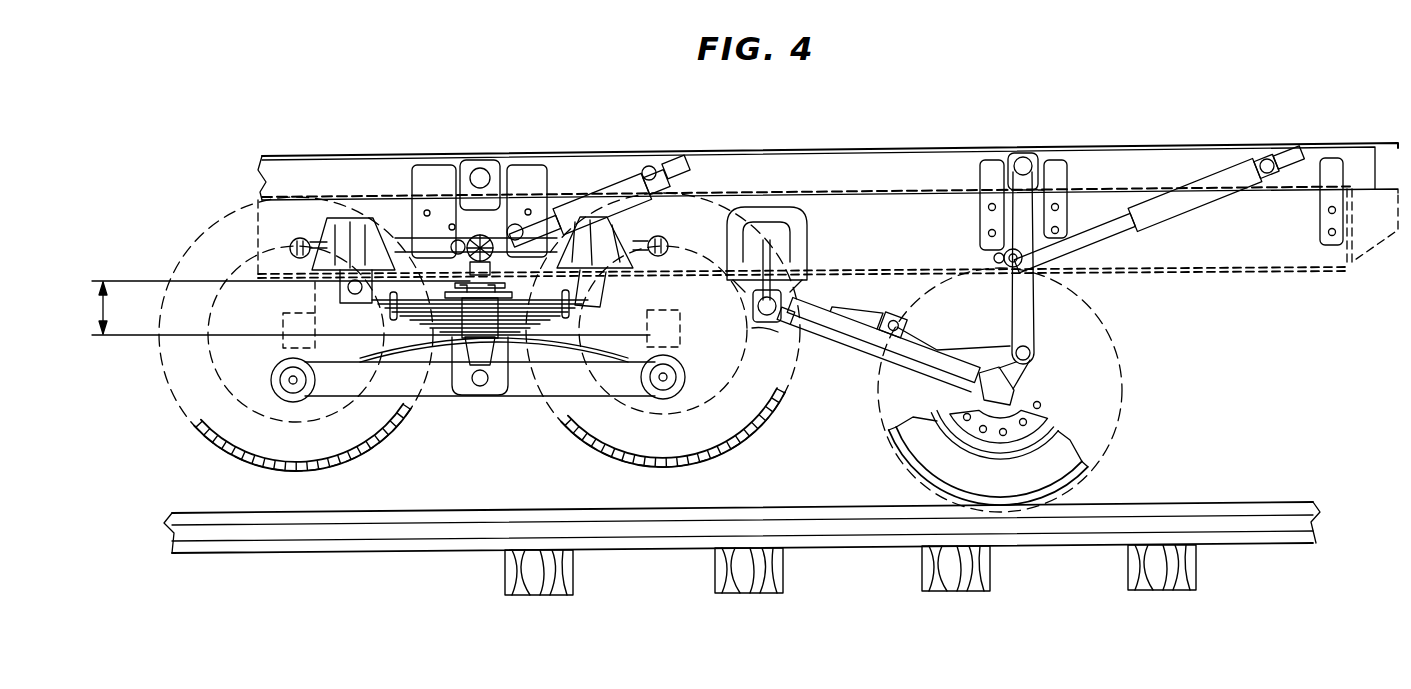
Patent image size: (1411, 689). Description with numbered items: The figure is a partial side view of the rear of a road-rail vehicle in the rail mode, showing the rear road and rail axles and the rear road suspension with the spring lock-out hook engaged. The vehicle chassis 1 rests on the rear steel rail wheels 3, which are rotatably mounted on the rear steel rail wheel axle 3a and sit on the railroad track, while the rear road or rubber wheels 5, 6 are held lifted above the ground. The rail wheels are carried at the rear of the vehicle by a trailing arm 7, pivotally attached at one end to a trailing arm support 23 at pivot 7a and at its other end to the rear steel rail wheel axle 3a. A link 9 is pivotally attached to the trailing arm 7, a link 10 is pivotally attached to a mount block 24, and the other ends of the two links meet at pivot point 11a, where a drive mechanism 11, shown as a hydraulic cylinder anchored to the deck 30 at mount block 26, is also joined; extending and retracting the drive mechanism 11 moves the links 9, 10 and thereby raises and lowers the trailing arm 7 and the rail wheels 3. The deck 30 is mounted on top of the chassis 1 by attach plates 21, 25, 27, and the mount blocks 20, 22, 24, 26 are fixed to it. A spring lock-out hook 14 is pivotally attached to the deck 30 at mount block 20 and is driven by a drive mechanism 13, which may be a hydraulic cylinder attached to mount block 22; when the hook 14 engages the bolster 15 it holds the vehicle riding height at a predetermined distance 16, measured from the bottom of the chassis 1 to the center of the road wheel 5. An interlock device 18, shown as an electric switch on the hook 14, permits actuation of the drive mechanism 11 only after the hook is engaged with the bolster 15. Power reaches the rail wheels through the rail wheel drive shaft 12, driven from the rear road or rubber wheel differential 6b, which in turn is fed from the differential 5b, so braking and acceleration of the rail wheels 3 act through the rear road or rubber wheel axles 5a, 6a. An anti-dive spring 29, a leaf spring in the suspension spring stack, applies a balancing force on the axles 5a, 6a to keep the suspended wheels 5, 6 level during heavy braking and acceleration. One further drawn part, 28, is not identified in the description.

The vehicle chassis 1 is at (1372, 252).
The rear steel rail wheels 3 is at (1120, 363).
The rear steel rail wheel axle 3a is at (1025, 372).
The rear road or rubber wheels 5 is at (200, 425).
The rear road or rubber wheel axle 5a is at (283, 340).
The rear road or rubber wheel differential 5b is at (315, 292).
The rear road or rubber wheels 6 is at (580, 427).
The rear road or rubber wheel axle 6a is at (647, 333).
The rear road or rubber wheel differential 6b is at (712, 363).
The trailing arm 7 is at (836, 342).
The pivot 7a is at (772, 326).
The link 9 is at (1025, 311).
The link 10 is at (1040, 201).
The drive mechanism 11 is at (1220, 168).
The pivot point 11a is at (1033, 262).
The rail wheel drive shaft 12 is at (858, 302).
The drive mechanism 13 is at (612, 178).
The spring lock-out hook 14 is at (492, 248).
The bolster 15 is at (460, 285).
The predetermined distance 16 is at (364, 308).
The interlock device 18 is at (535, 170).
The mount block 20 is at (460, 200).
The attach plate 21 is at (482, 240).
The mount block 22 is at (672, 163).
The trailing arm support 23 is at (767, 207).
The mount block 24 is at (1023, 154).
The attach plate 25 is at (993, 163).
The mount block 26 is at (1289, 155).
The attach plate 27 is at (1333, 163).
The pin 28 is at (994, 258).
The anti-dive spring 29 is at (385, 352).
The deck 30 is at (846, 163).